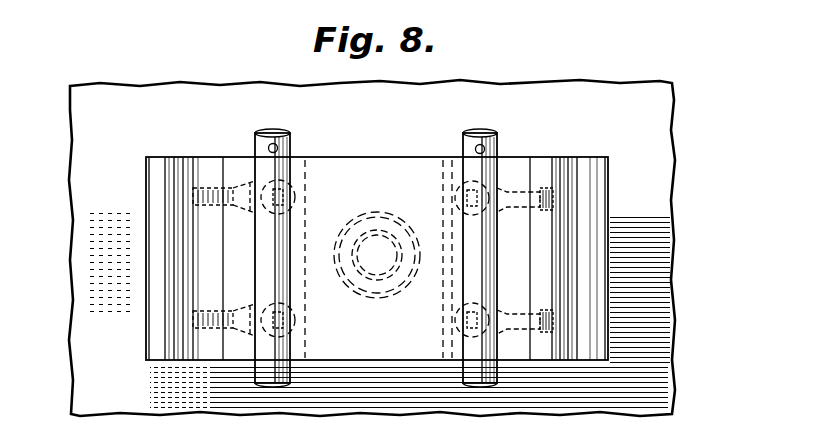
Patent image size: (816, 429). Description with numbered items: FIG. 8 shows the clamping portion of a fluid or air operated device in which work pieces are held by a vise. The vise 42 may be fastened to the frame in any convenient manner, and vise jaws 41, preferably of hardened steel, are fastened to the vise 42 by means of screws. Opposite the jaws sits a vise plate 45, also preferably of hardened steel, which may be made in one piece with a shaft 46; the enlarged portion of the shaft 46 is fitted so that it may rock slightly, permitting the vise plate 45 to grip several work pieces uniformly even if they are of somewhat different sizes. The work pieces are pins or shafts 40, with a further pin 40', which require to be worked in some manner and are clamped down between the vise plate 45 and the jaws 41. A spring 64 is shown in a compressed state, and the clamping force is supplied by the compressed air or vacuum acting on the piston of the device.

The pins or shafts 40 is at (400, 245).
The post sleeve 40' is at (400, 238).
The vise jaws 41 is at (238, 177).
The vise 42 is at (177, 187).
The vise plate 45 is at (382, 172).
The shaft 46 is at (377, 292).
The spring 64 is at (343, 265).